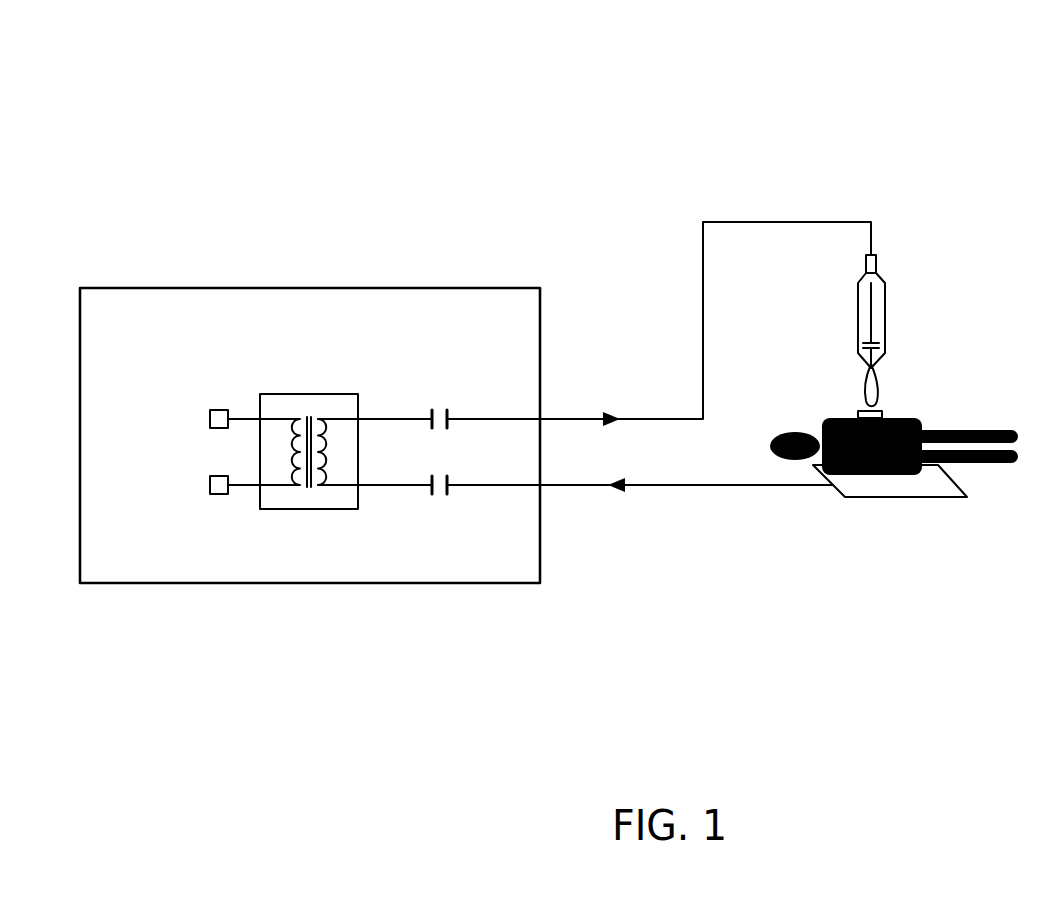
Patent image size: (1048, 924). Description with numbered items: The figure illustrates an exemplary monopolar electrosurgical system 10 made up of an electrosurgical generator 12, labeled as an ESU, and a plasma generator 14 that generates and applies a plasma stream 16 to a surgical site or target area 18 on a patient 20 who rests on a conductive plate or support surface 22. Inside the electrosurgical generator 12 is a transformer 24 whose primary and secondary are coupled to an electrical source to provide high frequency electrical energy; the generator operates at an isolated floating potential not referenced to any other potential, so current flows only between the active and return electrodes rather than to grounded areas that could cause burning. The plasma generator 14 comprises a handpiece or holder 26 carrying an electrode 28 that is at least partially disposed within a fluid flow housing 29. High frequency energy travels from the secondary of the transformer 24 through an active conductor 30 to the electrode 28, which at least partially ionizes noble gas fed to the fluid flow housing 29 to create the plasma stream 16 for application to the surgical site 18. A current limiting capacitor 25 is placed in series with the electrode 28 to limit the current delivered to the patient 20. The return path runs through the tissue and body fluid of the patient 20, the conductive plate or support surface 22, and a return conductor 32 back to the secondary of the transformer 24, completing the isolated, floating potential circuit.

The monopolar electrosurgical system 10 is at (516, 172).
The electrosurgical generator (ESU) 12 is at (184, 288).
The plasma generator 14 is at (895, 266).
The plasma stream 16 is at (882, 384).
The surgical site or target area 18 is at (884, 408).
The patient 20 is at (953, 430).
The conductive plate or support surface 22 is at (898, 497).
The transformer 24 is at (270, 394).
The current limiting capacitor 25 is at (863, 343).
The handpiece or holder 26 is at (886, 302).
The electrode 28 is at (868, 300).
The fluid flow housing 29 is at (862, 358).
The active conductor 30 is at (734, 222).
The return conductor 32 is at (716, 487).